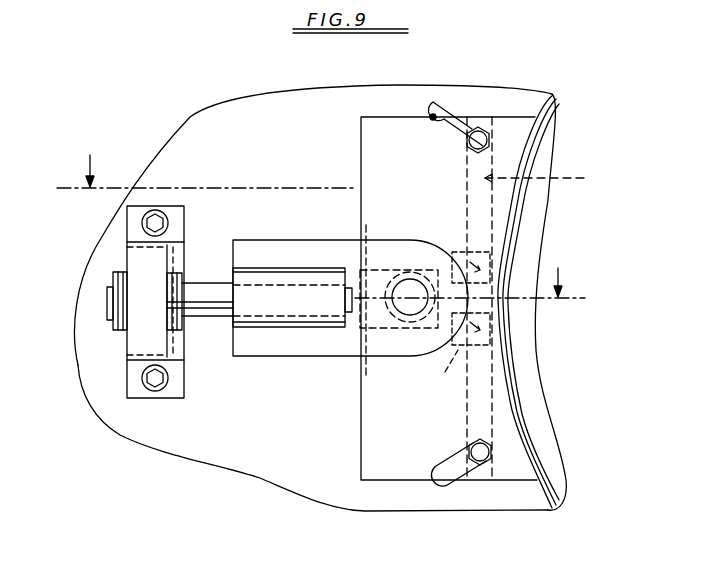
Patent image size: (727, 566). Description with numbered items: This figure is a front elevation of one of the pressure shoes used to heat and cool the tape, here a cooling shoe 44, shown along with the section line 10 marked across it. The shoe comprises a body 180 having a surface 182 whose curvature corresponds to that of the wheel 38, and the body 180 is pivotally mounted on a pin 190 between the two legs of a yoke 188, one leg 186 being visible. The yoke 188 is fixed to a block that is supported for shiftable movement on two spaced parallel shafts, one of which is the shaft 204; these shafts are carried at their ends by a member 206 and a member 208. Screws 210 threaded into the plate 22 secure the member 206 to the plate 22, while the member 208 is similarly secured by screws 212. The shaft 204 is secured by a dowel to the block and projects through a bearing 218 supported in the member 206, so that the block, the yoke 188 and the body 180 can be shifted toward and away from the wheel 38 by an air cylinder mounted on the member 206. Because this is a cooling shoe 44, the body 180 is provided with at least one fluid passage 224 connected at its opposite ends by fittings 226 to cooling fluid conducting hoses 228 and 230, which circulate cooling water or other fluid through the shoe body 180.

The section line 10- 10 is at (322, 226).
The plate 22 is at (254, 455).
The wheel 38 is at (557, 452).
The cooling shoe 44 is at (338, 171).
The body 180 is at (449, 298).
The surface 182 is at (537, 472).
The leg 186 is at (387, 249).
The yoke 188 is at (278, 345).
The pin 190 is at (417, 282).
The shaft 204 is at (215, 303).
The member 206 is at (131, 388).
The member 208 is at (440, 371).
The screws 210 is at (168, 223).
The screws 212 is at (492, 262).
The bearing 218 is at (115, 323).
The fluid passage 224 is at (557, 178).
The fittings 226 is at (497, 128).
The cooling fluid conducting hose 228 is at (445, 478).
The cooling fluid conducting hose 230 is at (448, 116).